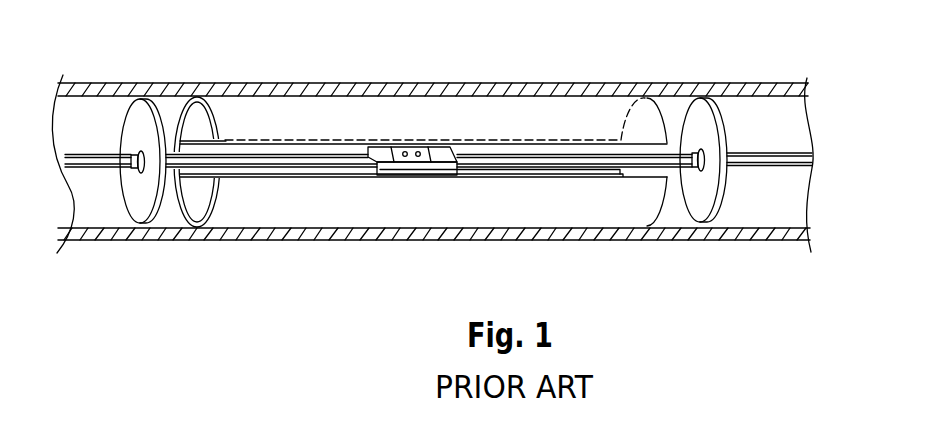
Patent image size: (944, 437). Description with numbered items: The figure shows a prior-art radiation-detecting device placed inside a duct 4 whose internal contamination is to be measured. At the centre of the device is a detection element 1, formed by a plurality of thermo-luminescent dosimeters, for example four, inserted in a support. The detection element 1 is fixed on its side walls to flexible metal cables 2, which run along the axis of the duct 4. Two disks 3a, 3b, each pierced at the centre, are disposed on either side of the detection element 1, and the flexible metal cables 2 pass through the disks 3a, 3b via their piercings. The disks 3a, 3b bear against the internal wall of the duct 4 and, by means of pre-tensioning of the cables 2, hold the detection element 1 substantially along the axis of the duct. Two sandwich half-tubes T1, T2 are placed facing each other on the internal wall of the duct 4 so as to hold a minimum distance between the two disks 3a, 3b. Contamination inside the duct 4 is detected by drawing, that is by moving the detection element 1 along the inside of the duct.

The detection element 1 is at (391, 170).
The flexible metal cables 2 is at (528, 162).
The first disk 3a is at (139, 192).
The second disk 3b is at (734, 193).
The duct 4 is at (362, 88).
The first sandwich half-tube T1 is at (518, 117).
The second sandwich half-tube T2 is at (592, 203).